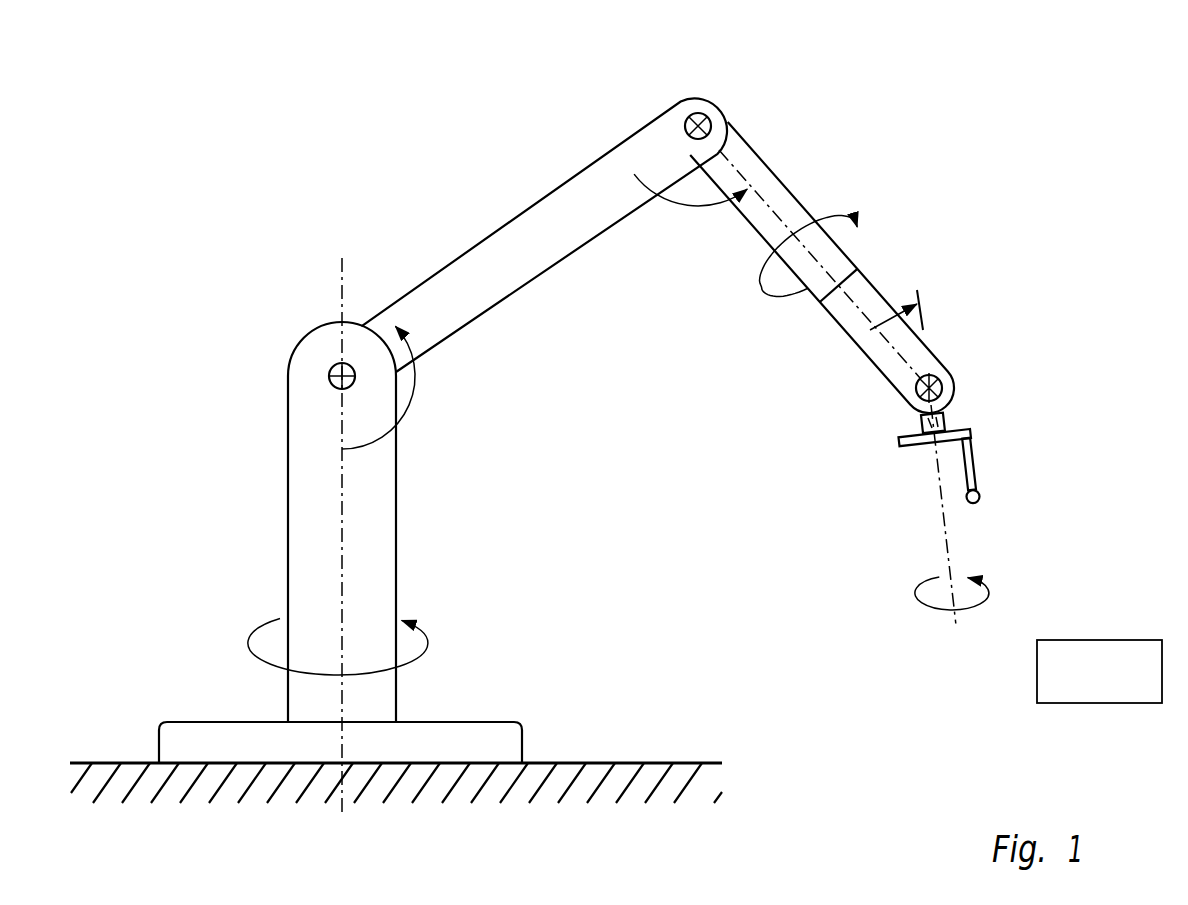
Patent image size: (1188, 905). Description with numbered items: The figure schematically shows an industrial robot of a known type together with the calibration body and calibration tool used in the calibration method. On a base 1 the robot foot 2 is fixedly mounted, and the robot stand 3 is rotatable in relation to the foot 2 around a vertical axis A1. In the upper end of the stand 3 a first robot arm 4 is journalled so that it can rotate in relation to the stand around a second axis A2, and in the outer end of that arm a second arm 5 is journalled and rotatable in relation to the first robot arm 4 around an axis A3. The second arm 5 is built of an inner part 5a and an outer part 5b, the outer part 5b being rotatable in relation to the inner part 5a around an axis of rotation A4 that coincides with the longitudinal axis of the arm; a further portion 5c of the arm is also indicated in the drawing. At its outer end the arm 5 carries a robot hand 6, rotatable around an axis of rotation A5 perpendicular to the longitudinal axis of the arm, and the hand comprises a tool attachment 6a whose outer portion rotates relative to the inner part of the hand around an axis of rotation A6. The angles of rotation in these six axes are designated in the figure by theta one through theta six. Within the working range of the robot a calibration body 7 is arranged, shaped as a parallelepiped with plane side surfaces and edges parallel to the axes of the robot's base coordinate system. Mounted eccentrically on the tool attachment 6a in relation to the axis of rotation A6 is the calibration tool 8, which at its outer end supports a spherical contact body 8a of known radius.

The base 1 is at (668, 764).
The robot foot 2 is at (172, 744).
The stand 3 is at (377, 582).
The first robot arm 4 is at (515, 232).
The second arm 5 is at (862, 170).
The inner part 5a is at (768, 223).
The outer part 5b is at (875, 350).
The lower arm third segment 5c is at (858, 272).
The robot hand 6 is at (957, 418).
The tool attachment 6a is at (910, 442).
The calibration body 7 is at (1100, 652).
The calibration tool 8 is at (980, 468).
The spherical contact body 8a is at (978, 502).
The vertical axis A1 is at (342, 289).
The second axis A2 is at (329, 382).
The axis A3 is at (690, 103).
The axis of rotation A4 is at (760, 166).
The axis of rotation A5 is at (953, 387).
The axis of rotation A6 is at (950, 533).